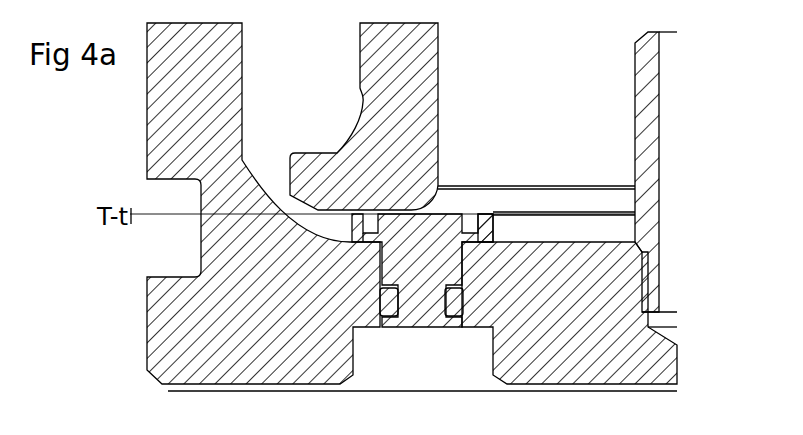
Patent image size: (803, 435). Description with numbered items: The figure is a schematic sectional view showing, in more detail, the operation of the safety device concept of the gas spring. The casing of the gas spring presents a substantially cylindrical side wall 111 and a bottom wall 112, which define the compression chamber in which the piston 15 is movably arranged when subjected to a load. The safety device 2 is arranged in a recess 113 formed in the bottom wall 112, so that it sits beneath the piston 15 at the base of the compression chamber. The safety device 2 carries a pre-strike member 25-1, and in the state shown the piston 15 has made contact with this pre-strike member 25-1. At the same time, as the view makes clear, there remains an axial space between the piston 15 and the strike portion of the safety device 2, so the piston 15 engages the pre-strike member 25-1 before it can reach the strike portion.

The side wall 111 is at (192, 111).
The piston 15 is at (340, 180).
The bottom wall 112 is at (590, 303).
The safety device 2 is at (425, 272).
The pre-strike member 25-1 is at (492, 224).
The recess 113 is at (382, 305).